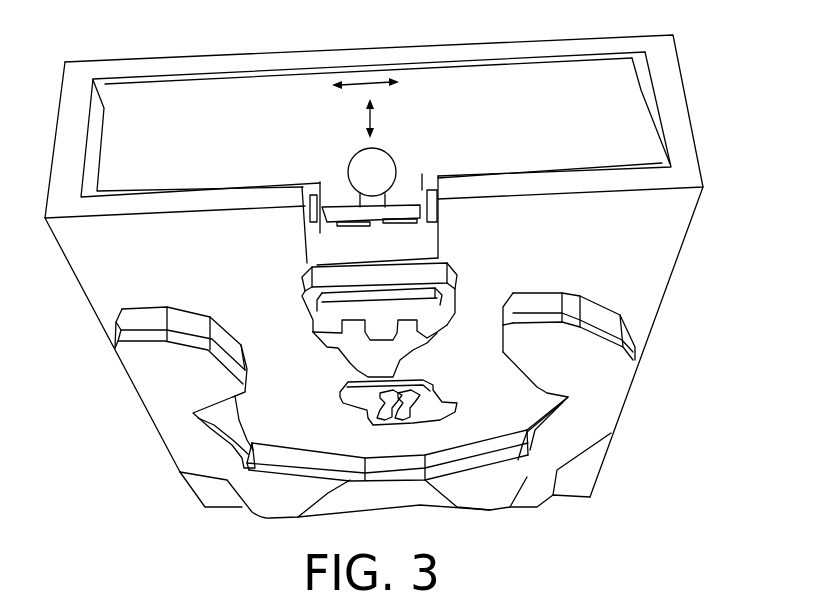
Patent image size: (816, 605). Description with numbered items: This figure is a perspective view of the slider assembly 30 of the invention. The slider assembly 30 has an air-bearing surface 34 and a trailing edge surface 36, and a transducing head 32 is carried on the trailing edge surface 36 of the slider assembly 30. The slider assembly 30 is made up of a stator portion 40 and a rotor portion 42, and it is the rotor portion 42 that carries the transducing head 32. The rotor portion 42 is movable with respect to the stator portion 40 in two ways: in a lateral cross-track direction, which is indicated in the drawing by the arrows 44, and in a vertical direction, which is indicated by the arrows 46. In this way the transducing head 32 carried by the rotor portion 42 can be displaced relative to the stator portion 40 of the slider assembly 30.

The slider assembly 30 is at (714, 80).
The transducing head 32 is at (385, 158).
The air-bearing surface 34 is at (648, 298).
The trailing edge surface 36 is at (686, 153).
The stator portion 40 is at (77, 63).
The rotor portion 42 is at (147, 93).
The arrows 44 is at (366, 80).
The arrows 46 is at (363, 117).